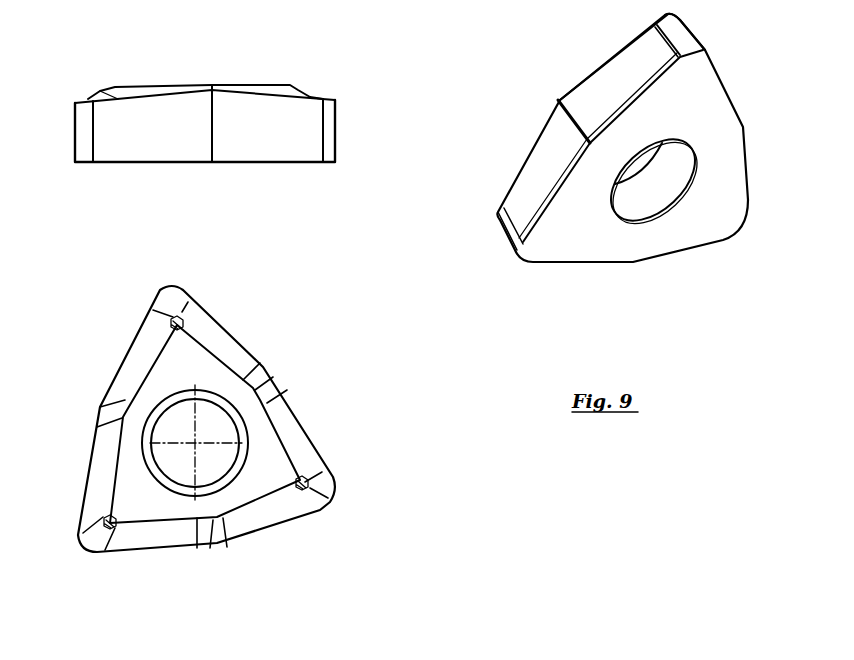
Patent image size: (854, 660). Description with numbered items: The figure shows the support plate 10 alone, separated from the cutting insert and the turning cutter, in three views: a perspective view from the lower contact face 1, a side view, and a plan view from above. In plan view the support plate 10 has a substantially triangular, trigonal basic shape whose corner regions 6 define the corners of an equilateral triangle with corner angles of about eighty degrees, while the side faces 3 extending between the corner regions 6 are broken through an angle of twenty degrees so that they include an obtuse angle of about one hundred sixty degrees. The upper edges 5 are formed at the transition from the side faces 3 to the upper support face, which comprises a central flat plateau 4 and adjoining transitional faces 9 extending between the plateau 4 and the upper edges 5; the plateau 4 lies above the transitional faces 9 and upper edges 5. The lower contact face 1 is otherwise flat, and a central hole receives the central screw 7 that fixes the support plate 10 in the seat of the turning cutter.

The lower contact face 1 is at (594, 232).
The side face 3 is at (543, 165).
The central flat plateau 4 is at (270, 86).
The upper edge 5 is at (607, 50).
The corner region 6 is at (680, 40).
The central screw 7 is at (655, 190).
The transitional face 9 is at (223, 345).
The support plate 10 is at (310, 353).